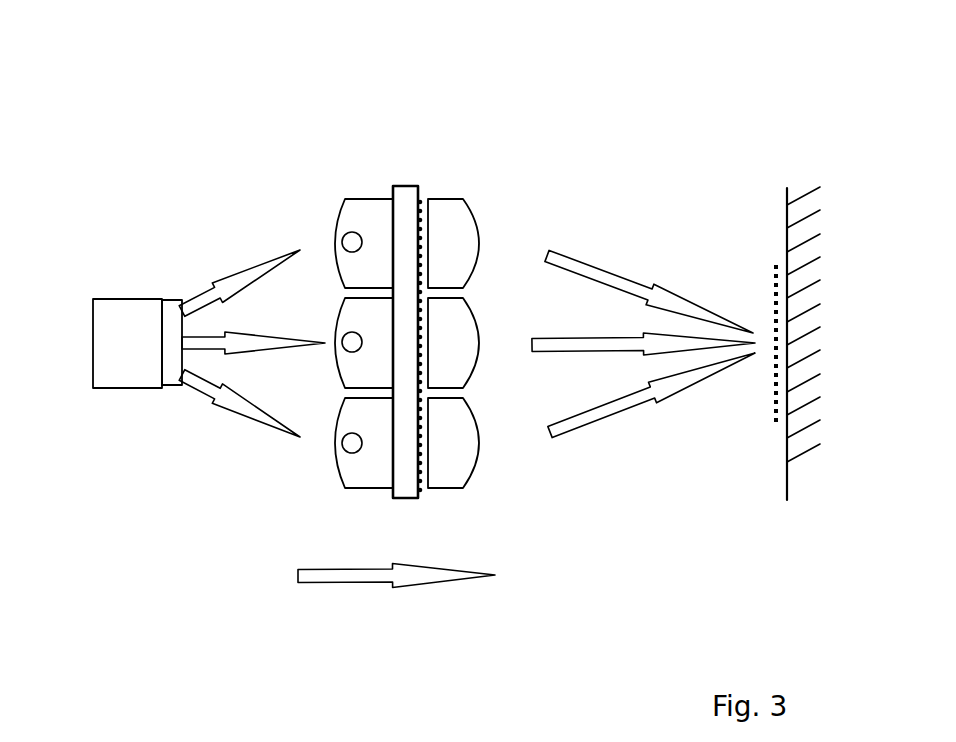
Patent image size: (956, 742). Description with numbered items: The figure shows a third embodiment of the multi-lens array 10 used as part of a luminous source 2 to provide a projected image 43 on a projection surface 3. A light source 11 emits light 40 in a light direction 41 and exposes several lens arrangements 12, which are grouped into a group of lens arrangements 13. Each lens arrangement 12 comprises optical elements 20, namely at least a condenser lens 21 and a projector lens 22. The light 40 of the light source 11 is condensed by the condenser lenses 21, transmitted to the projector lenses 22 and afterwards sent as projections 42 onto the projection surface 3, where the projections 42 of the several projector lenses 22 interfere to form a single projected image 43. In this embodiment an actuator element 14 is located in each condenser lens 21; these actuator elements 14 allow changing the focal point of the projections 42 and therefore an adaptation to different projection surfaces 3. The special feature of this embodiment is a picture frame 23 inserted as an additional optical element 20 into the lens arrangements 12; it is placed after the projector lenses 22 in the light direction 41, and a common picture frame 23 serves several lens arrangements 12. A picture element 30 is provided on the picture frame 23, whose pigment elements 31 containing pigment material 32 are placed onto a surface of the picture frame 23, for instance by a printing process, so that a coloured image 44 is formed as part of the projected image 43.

The luminous source 2 is at (435, 325).
The multi-lens array 10 is at (122, 78).
The light source 11 is at (118, 310).
The lens arrangement 12 is at (308, 340).
The group of lens arrangements 13 is at (400, 125).
The actuator element 14 is at (342, 242).
The optical element 20 is at (412, 334).
The condenser lens 21 is at (308, 340).
The projector lens 22 is at (448, 210).
The picture frame 23 is at (407, 193).
The picture element 30 is at (509, 375).
The pigment element 31 is at (509, 375).
The pigment material 32 is at (422, 343).
The light 40 is at (231, 393).
The light direction 41 is at (378, 583).
The projection 42 is at (680, 380).
The projected image 43 is at (719, 360).
The coloured image 44 is at (773, 415).
The projection surface 3 is at (790, 462).